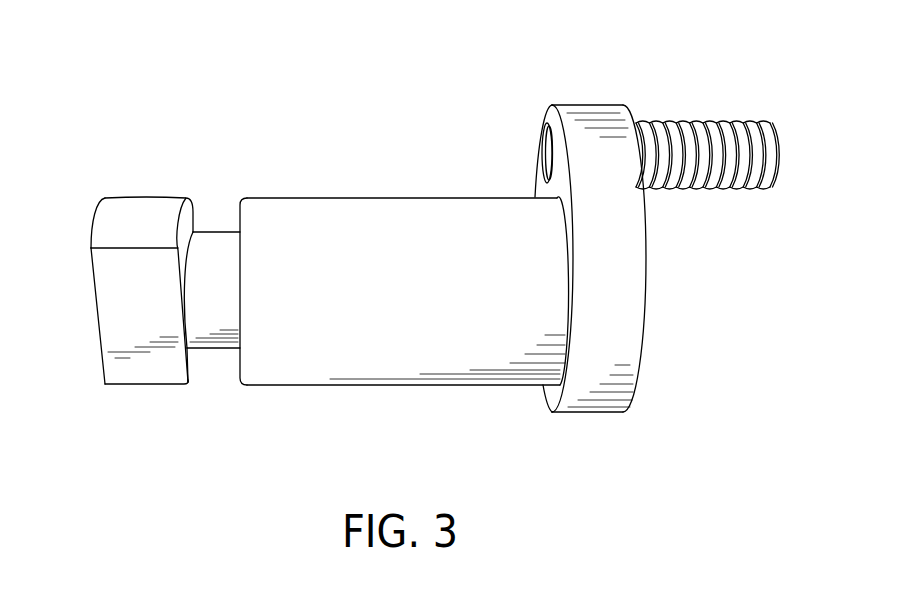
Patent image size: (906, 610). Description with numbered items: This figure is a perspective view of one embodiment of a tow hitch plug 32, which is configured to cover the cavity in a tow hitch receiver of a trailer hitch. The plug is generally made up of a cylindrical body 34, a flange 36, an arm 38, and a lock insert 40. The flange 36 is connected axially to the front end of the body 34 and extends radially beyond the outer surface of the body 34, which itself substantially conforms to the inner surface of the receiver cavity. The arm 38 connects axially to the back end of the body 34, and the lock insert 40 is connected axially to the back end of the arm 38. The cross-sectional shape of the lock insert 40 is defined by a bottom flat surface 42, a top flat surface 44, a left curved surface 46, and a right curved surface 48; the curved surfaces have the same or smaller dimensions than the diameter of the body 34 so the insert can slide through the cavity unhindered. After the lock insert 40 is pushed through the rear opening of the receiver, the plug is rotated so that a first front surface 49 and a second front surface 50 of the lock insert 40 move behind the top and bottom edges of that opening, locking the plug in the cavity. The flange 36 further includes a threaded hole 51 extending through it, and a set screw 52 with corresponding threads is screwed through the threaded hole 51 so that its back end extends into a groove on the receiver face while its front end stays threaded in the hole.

The tow hitch plug 32 is at (341, 92).
The cylindrical body 34 is at (445, 218).
The flange 36 is at (597, 120).
The arm 38 is at (222, 333).
The lock insert 40 is at (90, 208).
The bottom flat surface 42 is at (115, 302).
The top flat surface 44 is at (197, 229).
The left curved surface 46 is at (148, 210).
The right curved surface 48 is at (149, 385).
The first front surface 49 is at (188, 218).
The second front surface 50 is at (193, 369).
The threaded hole 51 is at (546, 151).
The set screw 52 is at (718, 122).